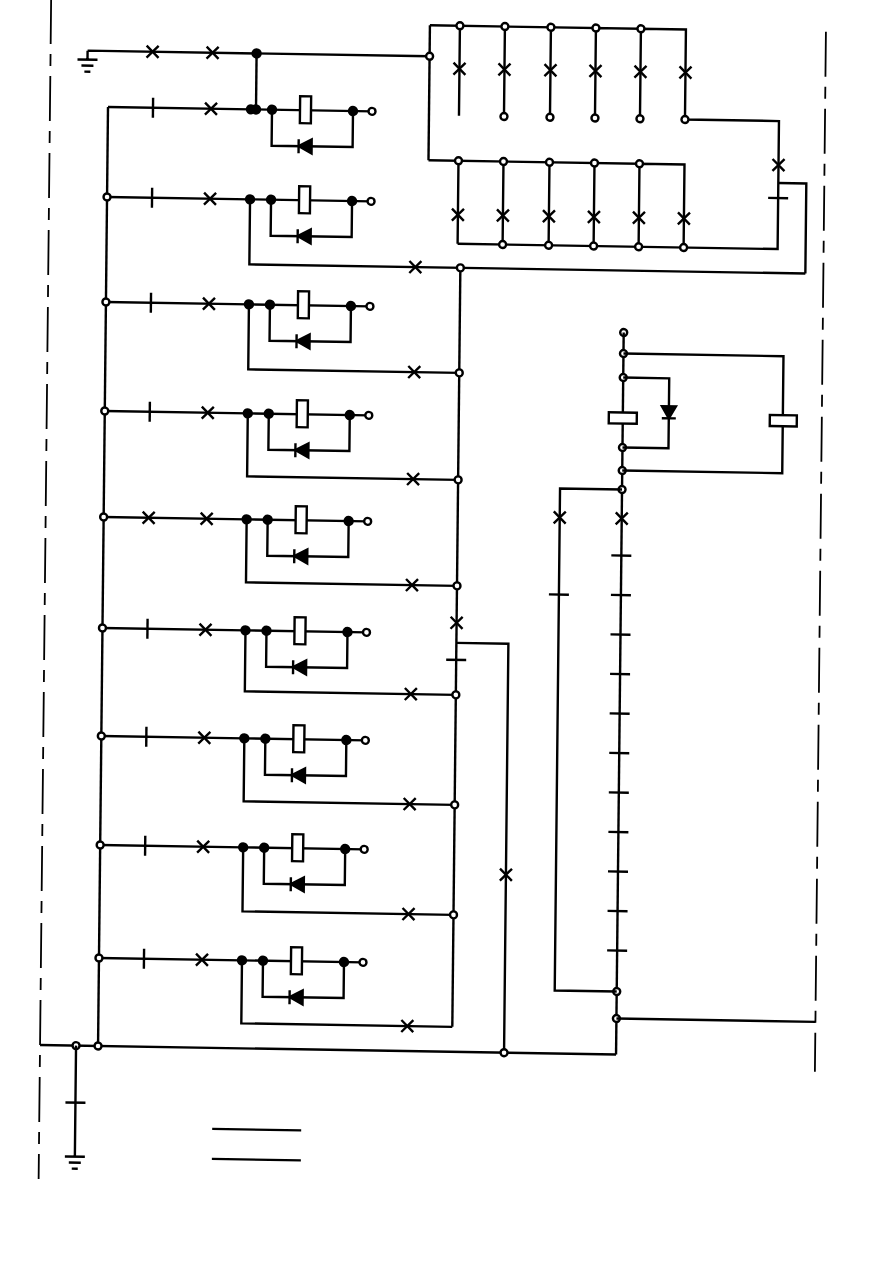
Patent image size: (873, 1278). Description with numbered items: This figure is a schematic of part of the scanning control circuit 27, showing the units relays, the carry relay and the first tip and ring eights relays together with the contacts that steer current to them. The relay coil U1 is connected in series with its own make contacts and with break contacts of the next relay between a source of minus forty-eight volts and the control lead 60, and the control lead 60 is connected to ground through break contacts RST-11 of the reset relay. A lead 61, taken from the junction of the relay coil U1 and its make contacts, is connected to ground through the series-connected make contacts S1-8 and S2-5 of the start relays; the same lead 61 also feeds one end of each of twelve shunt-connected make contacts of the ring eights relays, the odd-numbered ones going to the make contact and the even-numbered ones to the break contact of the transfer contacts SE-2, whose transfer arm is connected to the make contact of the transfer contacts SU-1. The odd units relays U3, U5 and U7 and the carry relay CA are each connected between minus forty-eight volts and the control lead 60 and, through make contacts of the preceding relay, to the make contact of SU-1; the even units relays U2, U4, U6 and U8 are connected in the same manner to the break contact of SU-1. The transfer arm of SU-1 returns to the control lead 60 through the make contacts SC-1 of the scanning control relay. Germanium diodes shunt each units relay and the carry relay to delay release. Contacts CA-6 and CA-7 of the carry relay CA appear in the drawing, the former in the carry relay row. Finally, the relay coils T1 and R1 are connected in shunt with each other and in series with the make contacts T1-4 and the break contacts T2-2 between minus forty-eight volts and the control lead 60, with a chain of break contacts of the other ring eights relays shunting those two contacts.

The scanning control circuit 27 is at (436, 629).
The control lead 60 is at (106, 611).
The lead 61 is at (428, 137).
The units relay U1 is at (311, 113).
The units relay U2 is at (305, 634).
The units relay U3 is at (310, 203).
The units relay U4 is at (304, 742).
The units relay U5 is at (308, 308).
The units relay U6 is at (303, 851).
The units relay U7 is at (307, 417).
The units relay U8 is at (302, 964).
The carry relay CA is at (306, 523).
The tip eights relay T1 is at (604, 417).
The ring eights relay R1 is at (709, 414).
The transfer contacts of steering eights relay SE-2 is at (771, 215).
The transfer contacts of steering units relay SU-1 is at (463, 830).
The make contacts of scanning control relay SC-1 is at (491, 874).
The break contacts of reset relay RST-11 is at (113, 1107).
The make contacts of start relay S2-5 is at (152, 40).
The make contacts of start relay S1-8 is at (212, 41).
The make contacts of tip eights relay T1-4 is at (535, 517).
The break contacts of tip eights relay T2-2 is at (536, 594).
The contact CA-7 is at (647, 518).
The make contacts of carry relay CA-6 is at (206, 504).